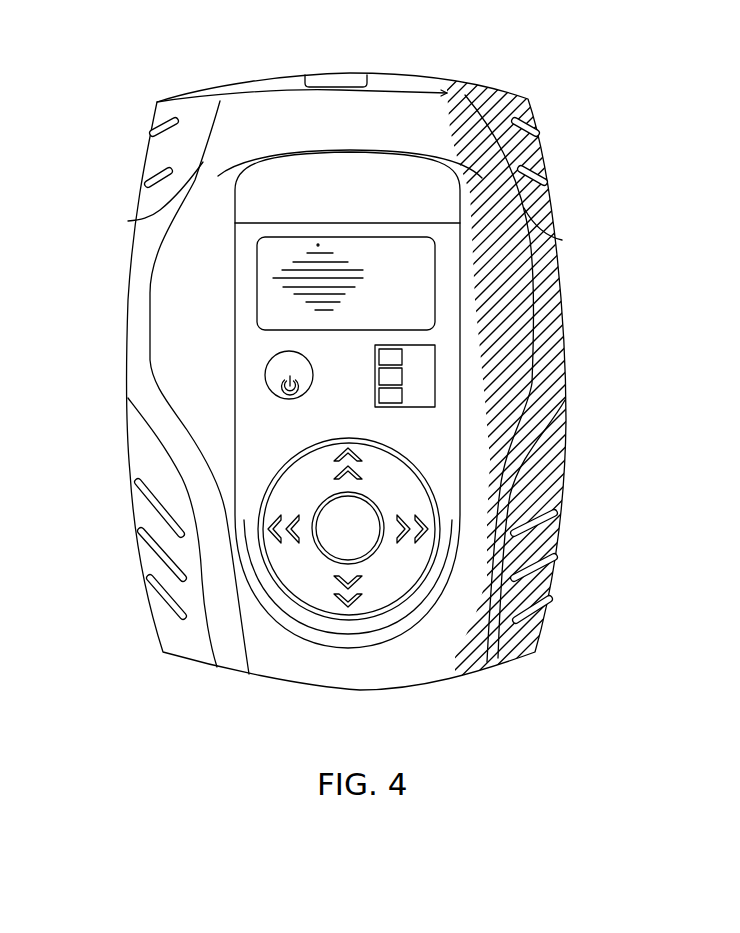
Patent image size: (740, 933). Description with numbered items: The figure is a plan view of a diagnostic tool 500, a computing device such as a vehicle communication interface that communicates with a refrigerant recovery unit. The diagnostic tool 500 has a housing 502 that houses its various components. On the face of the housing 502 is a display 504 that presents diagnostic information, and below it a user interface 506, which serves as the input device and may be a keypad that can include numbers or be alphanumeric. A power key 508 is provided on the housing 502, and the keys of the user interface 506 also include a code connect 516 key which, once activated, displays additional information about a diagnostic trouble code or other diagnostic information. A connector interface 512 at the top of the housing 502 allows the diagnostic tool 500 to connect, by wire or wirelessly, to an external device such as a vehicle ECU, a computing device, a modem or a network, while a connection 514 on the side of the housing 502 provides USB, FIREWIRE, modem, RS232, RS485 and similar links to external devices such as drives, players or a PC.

The diagnostic tool 500 is at (370, 383).
The housing 502 is at (127, 442).
The display 504 is at (268, 265).
The user interface 506 is at (273, 520).
The power key 508 is at (265, 370).
The connector interface 512 is at (336, 80).
The connection 514 is at (545, 152).
The code connect key 516 is at (353, 521).